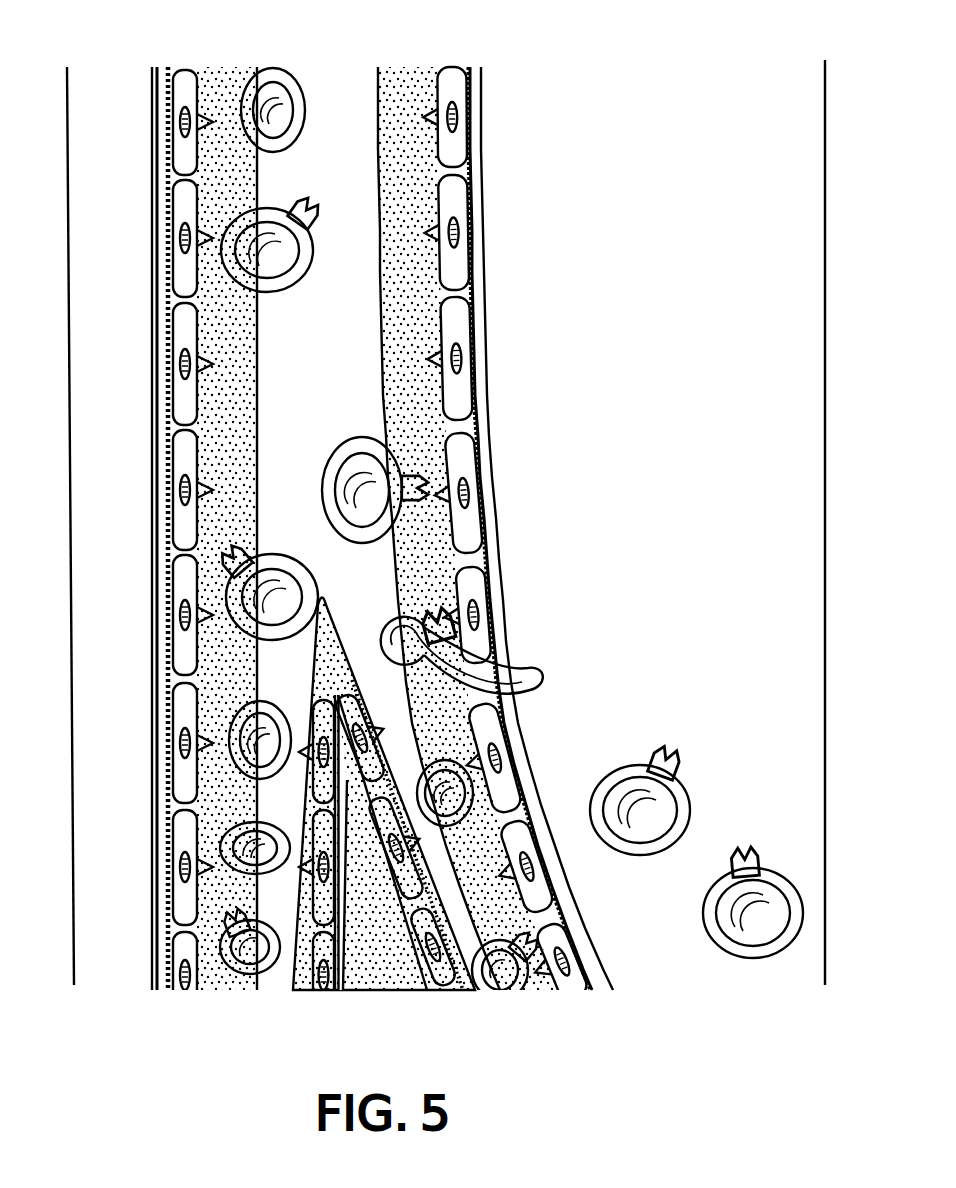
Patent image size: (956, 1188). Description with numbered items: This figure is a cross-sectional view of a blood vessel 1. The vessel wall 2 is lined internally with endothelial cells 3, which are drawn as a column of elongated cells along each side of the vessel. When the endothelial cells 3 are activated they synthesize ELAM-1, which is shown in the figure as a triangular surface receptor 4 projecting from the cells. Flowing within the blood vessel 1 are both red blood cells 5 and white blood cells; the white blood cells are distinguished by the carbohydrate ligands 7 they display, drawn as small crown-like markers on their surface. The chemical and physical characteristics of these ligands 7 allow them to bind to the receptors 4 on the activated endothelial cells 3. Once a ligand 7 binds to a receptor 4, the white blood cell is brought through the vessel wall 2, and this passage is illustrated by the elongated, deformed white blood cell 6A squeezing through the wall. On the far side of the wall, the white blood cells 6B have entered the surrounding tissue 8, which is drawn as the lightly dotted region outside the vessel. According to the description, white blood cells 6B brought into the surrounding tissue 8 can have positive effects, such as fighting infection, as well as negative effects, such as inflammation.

The blood vessel 1 is at (410, 72).
The vessel wall 2 is at (485, 100).
The endothelial cells 3 is at (182, 76).
The triangular surface receptor 4 is at (195, 221).
The red blood cells 5 is at (282, 70).
The white blood cell 6A is at (390, 626).
The white blood cells 6B is at (692, 790).
The carbohydrate ligands 7 is at (310, 225).
The surrounding tissue 8 is at (118, 578).